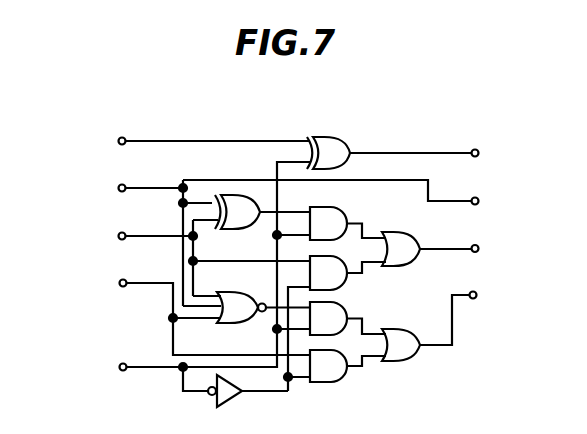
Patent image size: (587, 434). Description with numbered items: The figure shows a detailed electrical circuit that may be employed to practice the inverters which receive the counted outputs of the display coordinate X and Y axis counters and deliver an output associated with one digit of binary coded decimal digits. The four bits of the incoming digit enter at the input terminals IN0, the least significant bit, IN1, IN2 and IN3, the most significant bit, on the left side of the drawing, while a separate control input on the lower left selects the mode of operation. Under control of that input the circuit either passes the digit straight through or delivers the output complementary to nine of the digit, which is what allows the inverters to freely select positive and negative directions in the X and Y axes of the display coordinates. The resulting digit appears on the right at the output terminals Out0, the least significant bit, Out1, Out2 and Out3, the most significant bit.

The input bit 0 (LSB) IN0 is at (190, 135).
The input bit 1 IN1 is at (148, 242).
The input bit 2 IN2 is at (192, 258).
The input bit 3 (MSB) IN3 is at (190, 314).
The output bit 0 (LSB) Out0 is at (438, 147).
The output bit 1 Out1 is at (355, 197).
The output bit 2 Out2 is at (474, 248).
The output bit 3 (MSB) Out3 is at (474, 314).